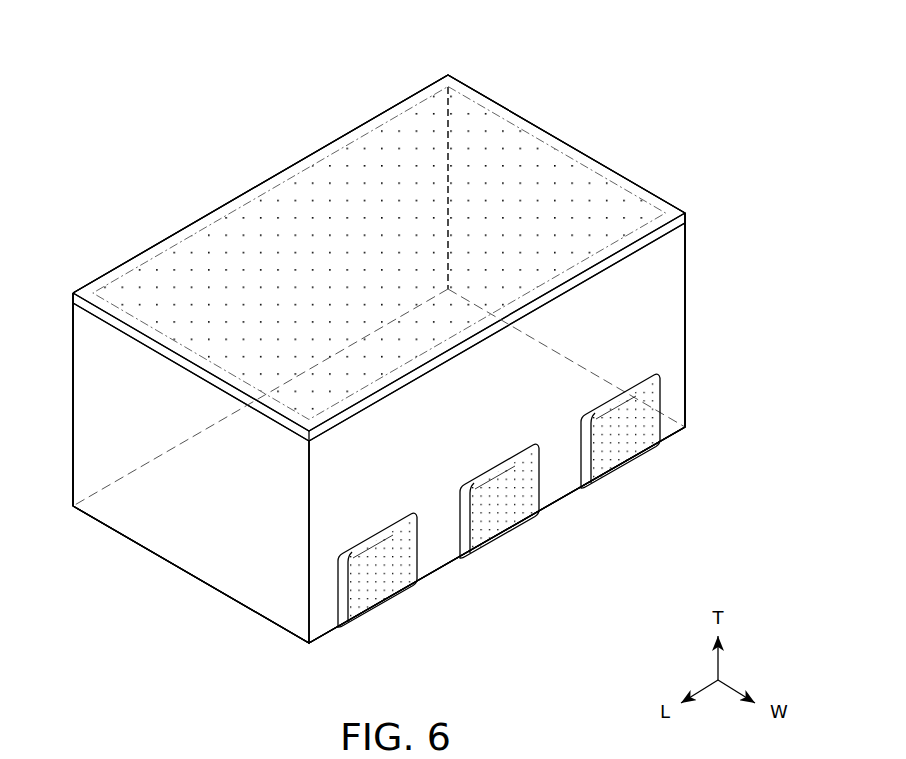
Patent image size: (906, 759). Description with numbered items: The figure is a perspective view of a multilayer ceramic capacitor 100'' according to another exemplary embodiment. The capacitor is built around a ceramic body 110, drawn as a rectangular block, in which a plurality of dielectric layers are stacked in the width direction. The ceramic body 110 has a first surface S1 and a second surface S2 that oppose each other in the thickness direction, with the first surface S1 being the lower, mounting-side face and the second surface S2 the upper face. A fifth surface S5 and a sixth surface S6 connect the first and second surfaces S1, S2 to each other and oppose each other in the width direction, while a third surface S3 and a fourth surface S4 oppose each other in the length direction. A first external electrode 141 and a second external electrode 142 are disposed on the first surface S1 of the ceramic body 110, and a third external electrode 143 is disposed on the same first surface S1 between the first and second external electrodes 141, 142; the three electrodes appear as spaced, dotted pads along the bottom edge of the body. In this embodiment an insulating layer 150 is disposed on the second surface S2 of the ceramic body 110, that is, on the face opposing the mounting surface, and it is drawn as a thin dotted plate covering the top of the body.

The multilayer ceramic capacitor 100'' is at (379, 323).
The ceramic body 110 is at (537, 153).
The insulating layer 150 is at (476, 120).
The first external electrode 141 is at (387, 595).
The second external electrode 142 is at (628, 455).
The third external electrode 143 is at (507, 525).
The first surface S1 is at (434, 551).
The second surface S2 is at (323, 198).
The third surface S3 is at (167, 527).
The fourth surface S4 is at (590, 210).
The fifth surface S5 is at (657, 329).
The sixth surface S6 is at (218, 268).